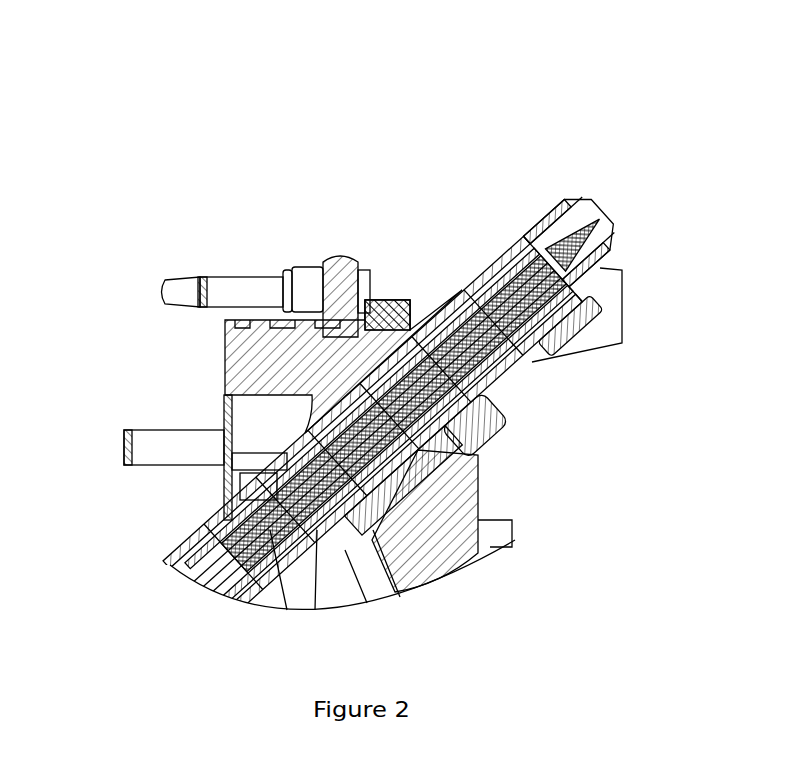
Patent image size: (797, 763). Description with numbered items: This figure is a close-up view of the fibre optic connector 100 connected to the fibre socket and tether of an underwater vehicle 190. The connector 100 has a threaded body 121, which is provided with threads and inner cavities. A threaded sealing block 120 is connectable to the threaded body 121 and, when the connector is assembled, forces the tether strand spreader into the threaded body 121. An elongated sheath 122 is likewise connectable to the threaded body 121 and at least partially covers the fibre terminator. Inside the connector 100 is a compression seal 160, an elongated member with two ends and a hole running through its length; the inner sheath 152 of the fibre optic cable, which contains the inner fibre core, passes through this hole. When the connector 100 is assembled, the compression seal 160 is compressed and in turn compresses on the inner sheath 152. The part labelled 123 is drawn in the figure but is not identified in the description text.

The fibre optic connector 100 is at (532, 190).
The threaded sealing block 120 is at (555, 315).
The threaded body 121 is at (480, 440).
The elongated sheath 122 is at (400, 562).
The flange plate 123 is at (240, 500).
The inner sheath 152 is at (330, 300).
The compression seal 160 is at (490, 265).
The underwater vehicle 190 is at (238, 385).